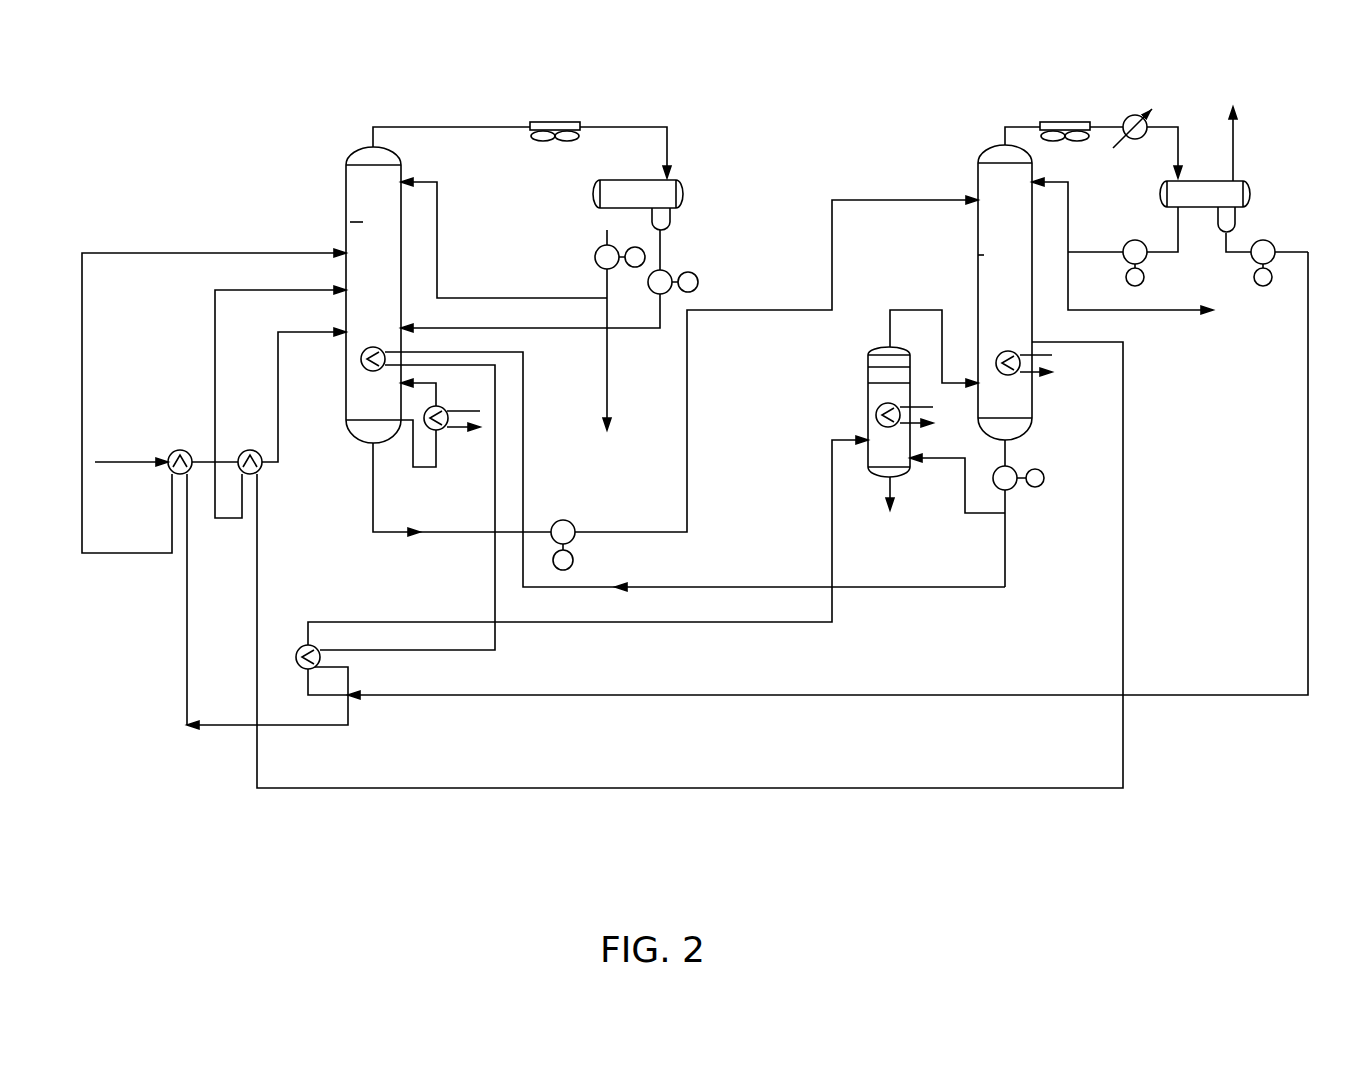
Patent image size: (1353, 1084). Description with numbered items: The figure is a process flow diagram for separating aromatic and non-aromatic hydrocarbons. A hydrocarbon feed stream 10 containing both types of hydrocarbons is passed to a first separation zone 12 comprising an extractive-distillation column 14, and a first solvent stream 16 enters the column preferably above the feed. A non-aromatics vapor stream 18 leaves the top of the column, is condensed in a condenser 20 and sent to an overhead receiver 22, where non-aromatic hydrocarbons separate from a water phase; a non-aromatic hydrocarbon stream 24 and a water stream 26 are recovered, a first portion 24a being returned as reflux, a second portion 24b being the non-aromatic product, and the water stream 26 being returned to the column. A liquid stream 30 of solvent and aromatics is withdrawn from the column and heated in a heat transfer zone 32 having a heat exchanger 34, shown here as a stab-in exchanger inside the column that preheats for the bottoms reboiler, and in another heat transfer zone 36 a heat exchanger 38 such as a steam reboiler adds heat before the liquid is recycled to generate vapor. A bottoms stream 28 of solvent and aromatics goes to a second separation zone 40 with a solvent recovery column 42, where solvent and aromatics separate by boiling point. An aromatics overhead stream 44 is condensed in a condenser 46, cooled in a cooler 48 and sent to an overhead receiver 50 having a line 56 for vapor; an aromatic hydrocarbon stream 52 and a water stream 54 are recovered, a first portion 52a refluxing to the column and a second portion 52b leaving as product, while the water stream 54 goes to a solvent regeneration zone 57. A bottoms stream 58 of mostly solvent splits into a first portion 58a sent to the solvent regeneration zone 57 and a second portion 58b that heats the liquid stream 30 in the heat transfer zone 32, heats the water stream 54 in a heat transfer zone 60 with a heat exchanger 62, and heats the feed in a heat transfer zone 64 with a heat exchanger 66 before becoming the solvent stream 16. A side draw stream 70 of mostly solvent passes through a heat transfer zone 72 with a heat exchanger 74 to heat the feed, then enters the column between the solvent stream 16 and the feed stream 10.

The hydrocarbon feed stream 10 is at (105, 458).
The first separation zone 12 is at (318, 188).
The extractive-distillation column 14 is at (350, 222).
The first solvent stream 16 is at (185, 250).
The non-aromatics vapor stream 18 is at (435, 120).
The condenser 20 is at (562, 118).
The overhead receiver 22 is at (685, 198).
The non-aromatic hydrocarbon stream 24 is at (600, 222).
The first portion of the non-aromatic hydrocarbon stream 24a is at (535, 293).
The second portion of the non-aromatic hydrocarbon stream 24b is at (600, 345).
The water stream 26 is at (661, 252).
The bottoms stream 28 is at (370, 490).
The liquid stream 30 is at (414, 445).
The heat transfer zone 32 is at (352, 374).
The heat exchanger 34 is at (370, 345).
The heat transfer zone 36 is at (444, 444).
The heat exchanger 38 is at (440, 405).
The second separation zone 40 is at (956, 154).
The solvent recovery column 42 is at (978, 255).
The aromatics overhead stream 44 is at (1020, 125).
The condenser 46 is at (1068, 120).
The cooler 48 is at (1130, 112).
The overhead receiver 50 is at (1255, 200).
The aromatic hydrocarbon stream 52 is at (1175, 230).
The first portion of the aromatic hydrocarbon stream 52a is at (1072, 212).
The second portion of the aromatic hydrocarbon stream 52b is at (1135, 312).
The water stream 54 is at (1228, 245).
The line for vapor 56 is at (1243, 143).
The solvent regeneration zone 57 is at (851, 383).
The bottoms stream 58 is at (1015, 455).
The first portion of the bottoms stream 58a is at (960, 484).
The second portion of the bottoms stream 58b is at (1010, 548).
The heat transfer zone 60 is at (304, 640).
The heat exchanger 62 is at (298, 660).
The heat transfer zone 64 is at (170, 432).
The heat exchanger 66 is at (183, 448).
The side draw stream 70 is at (1125, 470).
The heat transfer zone 72 is at (245, 432).
The heat exchanger 74 is at (258, 448).